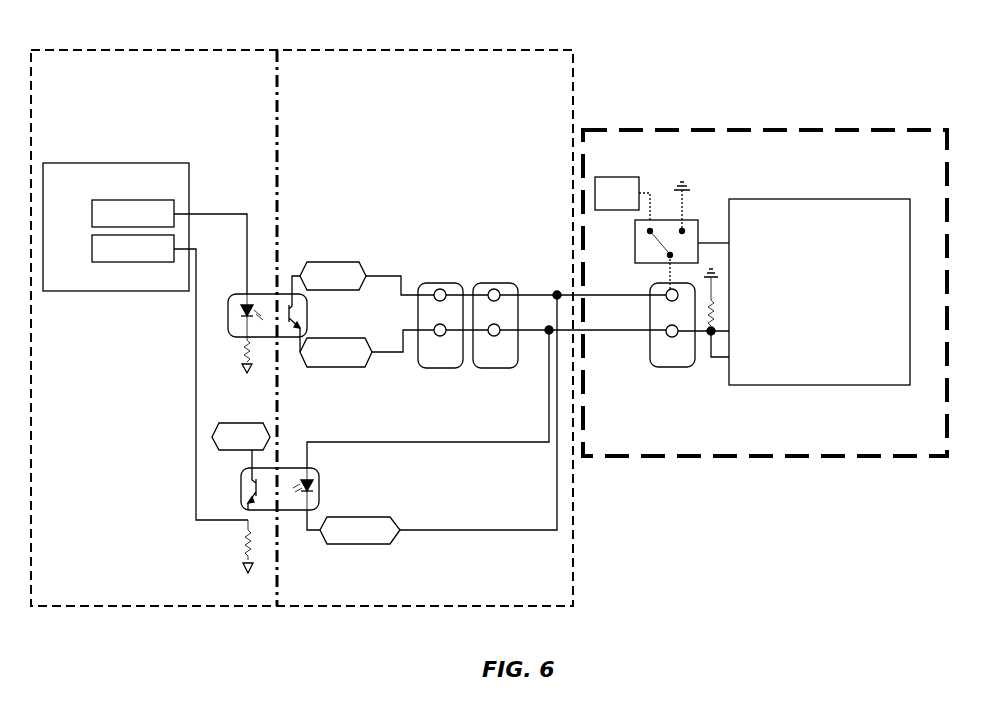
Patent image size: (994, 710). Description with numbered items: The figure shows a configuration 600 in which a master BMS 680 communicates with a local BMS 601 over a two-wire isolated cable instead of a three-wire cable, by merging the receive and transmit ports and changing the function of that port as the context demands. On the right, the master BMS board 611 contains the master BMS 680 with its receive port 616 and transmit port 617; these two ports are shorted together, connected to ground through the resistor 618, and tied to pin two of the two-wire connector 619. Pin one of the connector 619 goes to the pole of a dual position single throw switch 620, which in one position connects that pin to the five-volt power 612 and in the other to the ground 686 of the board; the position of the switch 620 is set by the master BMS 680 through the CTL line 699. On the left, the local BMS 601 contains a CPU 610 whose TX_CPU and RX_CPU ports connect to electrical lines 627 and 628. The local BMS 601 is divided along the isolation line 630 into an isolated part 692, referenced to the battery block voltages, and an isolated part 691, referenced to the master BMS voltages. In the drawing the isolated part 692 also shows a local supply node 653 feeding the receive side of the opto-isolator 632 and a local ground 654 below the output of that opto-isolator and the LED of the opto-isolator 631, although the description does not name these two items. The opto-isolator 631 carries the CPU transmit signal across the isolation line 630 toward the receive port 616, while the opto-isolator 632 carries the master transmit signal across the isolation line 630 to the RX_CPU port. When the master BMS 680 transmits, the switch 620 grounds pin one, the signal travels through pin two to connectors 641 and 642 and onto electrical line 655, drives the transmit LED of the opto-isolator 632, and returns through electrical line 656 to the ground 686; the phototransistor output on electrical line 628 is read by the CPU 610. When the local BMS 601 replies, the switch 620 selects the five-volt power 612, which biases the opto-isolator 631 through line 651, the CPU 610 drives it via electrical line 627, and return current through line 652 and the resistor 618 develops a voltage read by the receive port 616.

The configuration 600 is at (860, 50).
The local BMS 601 is at (185, 50).
The CPU 610 is at (92, 163).
The master BMS board 611 is at (824, 128).
The 5 Volts power 612 is at (608, 177).
The receive (RX) port 616 is at (759, 326).
The transmit (TX) port 617 is at (759, 352).
The resistor 618 is at (720, 301).
The 2-wire connector 619 is at (673, 368).
The dual position single throw (DPST) switch 620 is at (635, 244).
The electrical line 627 is at (203, 212).
The electrical line 628 is at (196, 316).
The isolation line 630 is at (281, 117).
The opto-isolator 631 is at (312, 310).
The opto-isolator 632 is at (325, 485).
The connector 641 is at (430, 283).
The connector 642 is at (488, 283).
The line 651 is at (379, 277).
The line 652 is at (378, 360).
The Vcc supply 653 is at (232, 424).
The ground 654 is at (240, 578).
The electrical line 655 is at (432, 443).
The electrical line 656 is at (460, 530).
The master BMS 680 is at (885, 199).
The ground 686 is at (691, 173).
The isolated part 691 is at (478, 562).
The isolated part 692 is at (70, 556).
The CTL line 699 is at (746, 229).